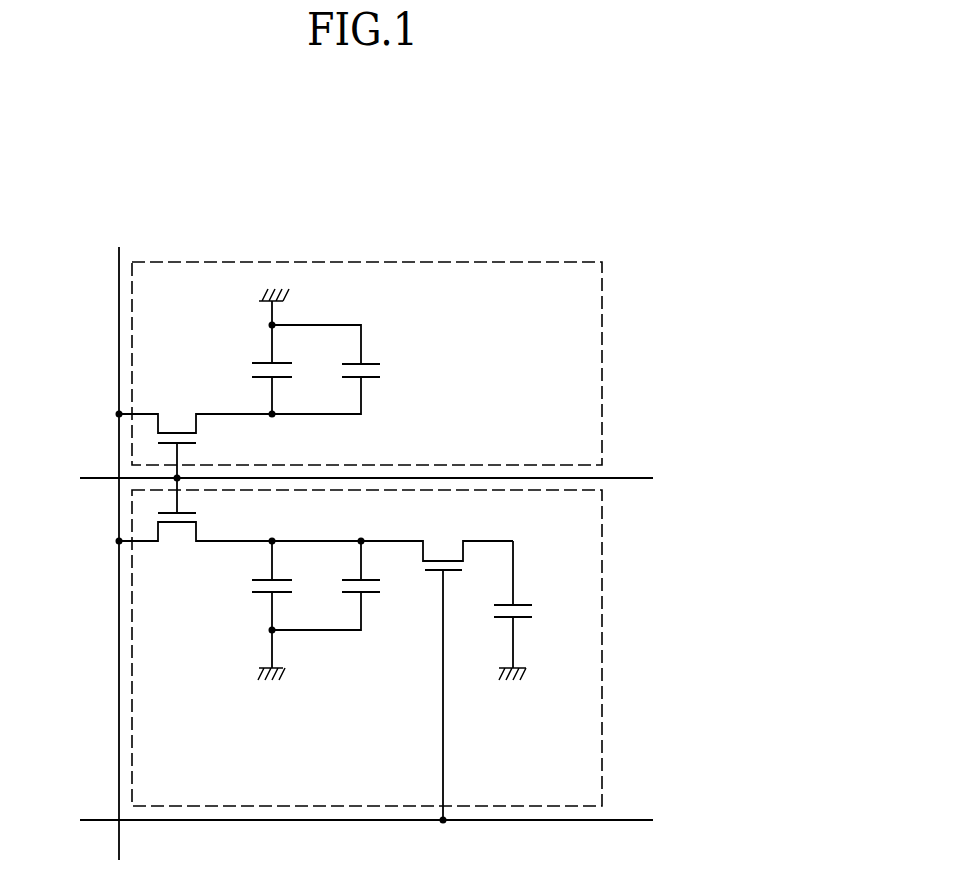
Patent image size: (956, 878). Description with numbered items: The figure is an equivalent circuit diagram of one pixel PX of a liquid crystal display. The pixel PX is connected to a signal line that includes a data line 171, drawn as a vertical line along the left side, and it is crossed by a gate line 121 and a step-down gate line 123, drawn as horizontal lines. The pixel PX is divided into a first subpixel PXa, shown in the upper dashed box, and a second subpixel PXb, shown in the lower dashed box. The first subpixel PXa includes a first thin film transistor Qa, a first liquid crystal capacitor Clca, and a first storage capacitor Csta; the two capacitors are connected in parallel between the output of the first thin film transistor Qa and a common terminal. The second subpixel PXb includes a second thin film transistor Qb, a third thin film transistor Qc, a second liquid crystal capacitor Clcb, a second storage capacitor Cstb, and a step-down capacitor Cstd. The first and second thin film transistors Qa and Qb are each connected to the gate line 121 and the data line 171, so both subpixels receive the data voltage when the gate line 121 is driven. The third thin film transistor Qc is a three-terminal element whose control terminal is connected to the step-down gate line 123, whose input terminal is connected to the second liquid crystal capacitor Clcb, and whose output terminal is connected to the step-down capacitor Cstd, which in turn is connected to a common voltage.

The data line 171 is at (119, 296).
The gate line 121 is at (95, 477).
The step-down gate line 123 is at (628, 820).
The pixel PX is at (225, 227).
The first subpixel PXa is at (472, 262).
The second subpixel PXb is at (603, 548).
The first thin film transistor Qa is at (194, 434).
The second thin film transistor Qb is at (194, 521).
The third thin film transistor Qc is at (437, 668).
The first liquid crystal capacitor Clca is at (248, 353).
The first storage capacitor Csta is at (351, 369).
The second liquid crystal capacitor Clcb is at (248, 609).
The second storage capacitor Cstb is at (351, 584).
The step-down capacitor Cstd is at (538, 610).